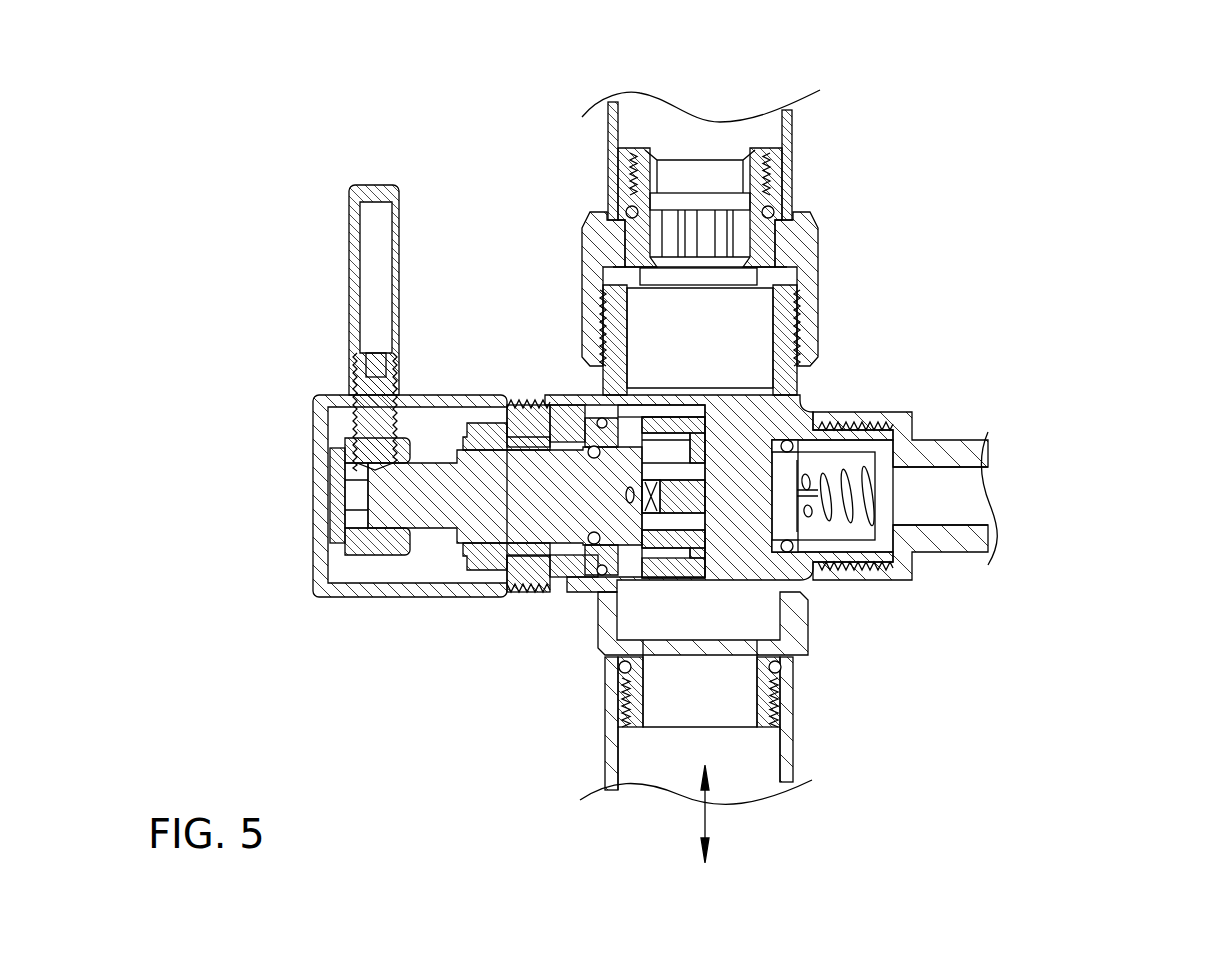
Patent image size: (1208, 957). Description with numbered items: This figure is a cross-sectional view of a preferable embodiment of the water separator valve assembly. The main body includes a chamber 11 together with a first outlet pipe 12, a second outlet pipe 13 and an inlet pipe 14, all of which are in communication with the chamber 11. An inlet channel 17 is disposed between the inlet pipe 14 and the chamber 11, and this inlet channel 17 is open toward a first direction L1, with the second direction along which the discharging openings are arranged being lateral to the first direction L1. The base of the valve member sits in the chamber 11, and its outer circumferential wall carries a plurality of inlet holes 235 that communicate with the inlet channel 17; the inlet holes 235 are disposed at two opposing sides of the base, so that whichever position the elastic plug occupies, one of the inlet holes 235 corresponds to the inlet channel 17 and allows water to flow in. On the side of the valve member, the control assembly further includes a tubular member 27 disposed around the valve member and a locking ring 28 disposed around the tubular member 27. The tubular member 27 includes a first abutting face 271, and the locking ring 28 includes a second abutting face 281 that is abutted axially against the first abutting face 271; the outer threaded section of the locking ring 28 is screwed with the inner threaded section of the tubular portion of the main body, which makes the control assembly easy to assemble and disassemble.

The chamber 11 is at (667, 413).
The first outlet pipe 12 is at (583, 228).
The second outlet pipe 13 is at (893, 560).
The inlet pipe 14 is at (797, 648).
The inlet channel 17 is at (650, 577).
The inlet holes 235 is at (678, 427).
The tubular member 27 is at (563, 415).
The first abutting face 271 is at (512, 590).
The locking ring 28 is at (528, 413).
The second abutting face 281 is at (557, 590).
The first direction L1 is at (703, 813).